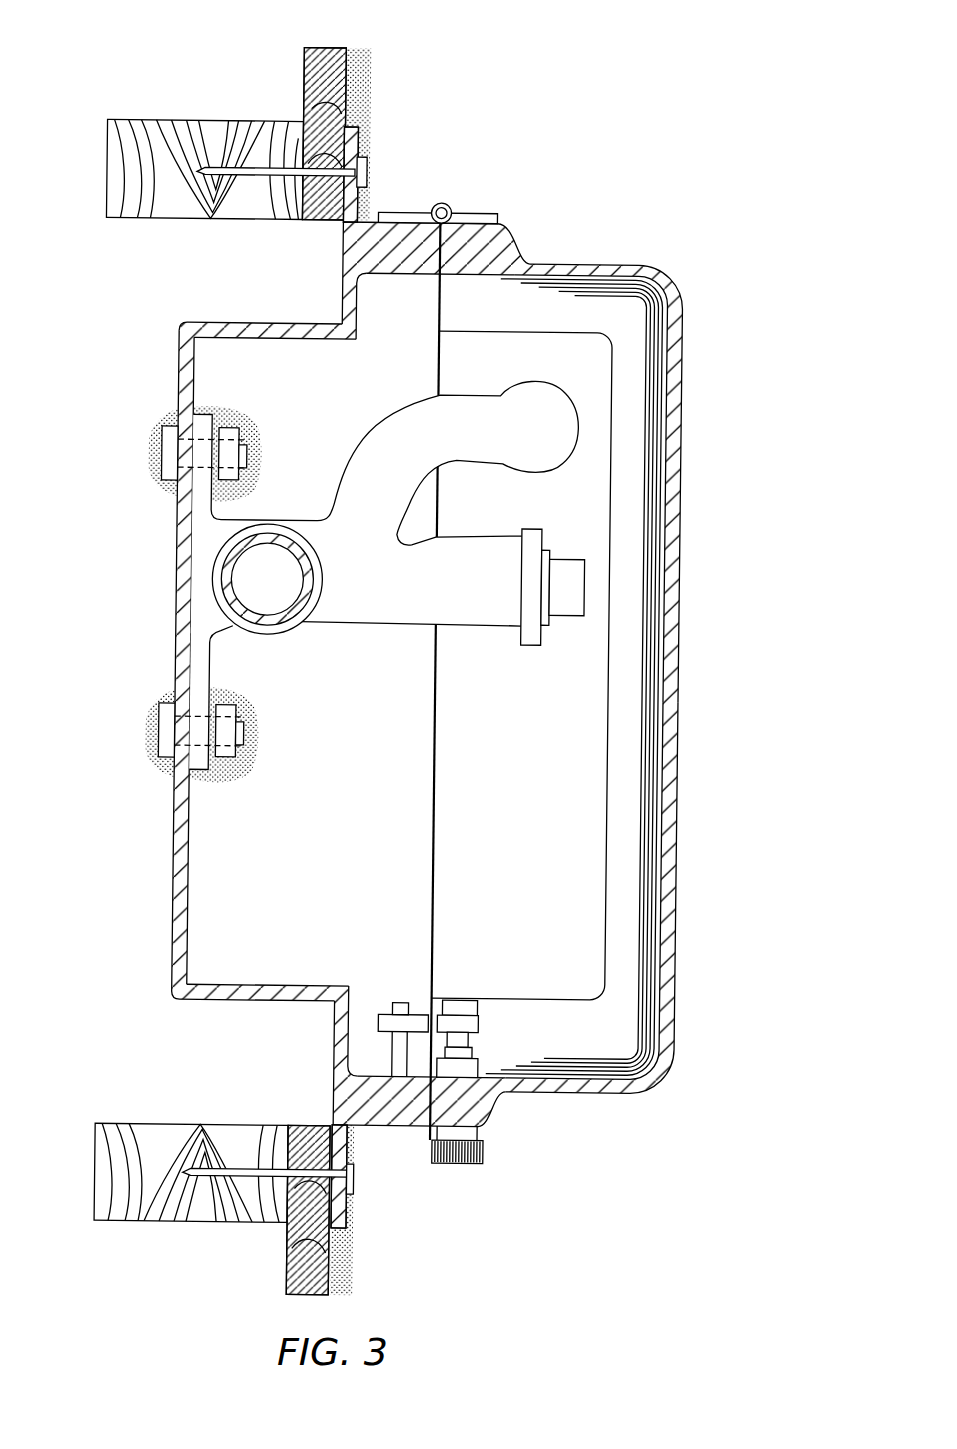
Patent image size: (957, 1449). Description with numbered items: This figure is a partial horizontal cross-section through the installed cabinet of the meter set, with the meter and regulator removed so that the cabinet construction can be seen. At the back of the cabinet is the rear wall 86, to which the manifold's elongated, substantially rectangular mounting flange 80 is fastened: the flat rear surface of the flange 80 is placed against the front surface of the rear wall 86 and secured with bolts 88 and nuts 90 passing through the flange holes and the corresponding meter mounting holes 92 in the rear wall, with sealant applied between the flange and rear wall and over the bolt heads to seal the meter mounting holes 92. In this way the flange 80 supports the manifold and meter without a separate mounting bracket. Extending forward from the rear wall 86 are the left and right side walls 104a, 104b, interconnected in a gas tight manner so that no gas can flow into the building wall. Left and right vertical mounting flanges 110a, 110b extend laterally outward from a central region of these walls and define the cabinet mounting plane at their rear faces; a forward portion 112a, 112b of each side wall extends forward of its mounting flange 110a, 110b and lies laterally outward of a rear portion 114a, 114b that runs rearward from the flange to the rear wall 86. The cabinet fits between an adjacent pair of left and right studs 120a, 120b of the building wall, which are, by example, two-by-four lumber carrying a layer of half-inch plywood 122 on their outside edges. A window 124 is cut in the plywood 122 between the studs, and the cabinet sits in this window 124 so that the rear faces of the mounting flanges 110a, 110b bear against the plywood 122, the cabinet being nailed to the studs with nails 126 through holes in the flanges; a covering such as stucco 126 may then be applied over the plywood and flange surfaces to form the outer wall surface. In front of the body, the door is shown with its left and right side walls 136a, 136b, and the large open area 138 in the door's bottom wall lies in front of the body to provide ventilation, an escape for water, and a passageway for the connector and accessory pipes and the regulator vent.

The mounting flange 80 is at (197, 762).
The rear wall 86 is at (178, 936).
The bolts 88 is at (167, 471).
The nuts 90 is at (232, 428).
The meter mounting holes 92 is at (180, 442).
The left side wall 104a is at (190, 306).
The right side wall 104b is at (185, 1010).
The left vertical mounting flange 110a is at (350, 141).
The right vertical mounting flange 110b is at (333, 1217).
The forward portion of left wall 112a is at (408, 228).
The forward portion of right wall 112b is at (383, 1127).
The rear portion of left wall 114a is at (310, 322).
The rear portion of right wall 114b is at (257, 1003).
The left stud 120a is at (133, 140).
The right stud 120b is at (118, 1207).
The plywood 122 is at (330, 70).
The window 124 is at (330, 231).
The nails 126 is at (355, 80).
The left side wall of door 136a is at (588, 262).
The right side wall of door 136b is at (570, 1093).
The open area 138 is at (603, 788).